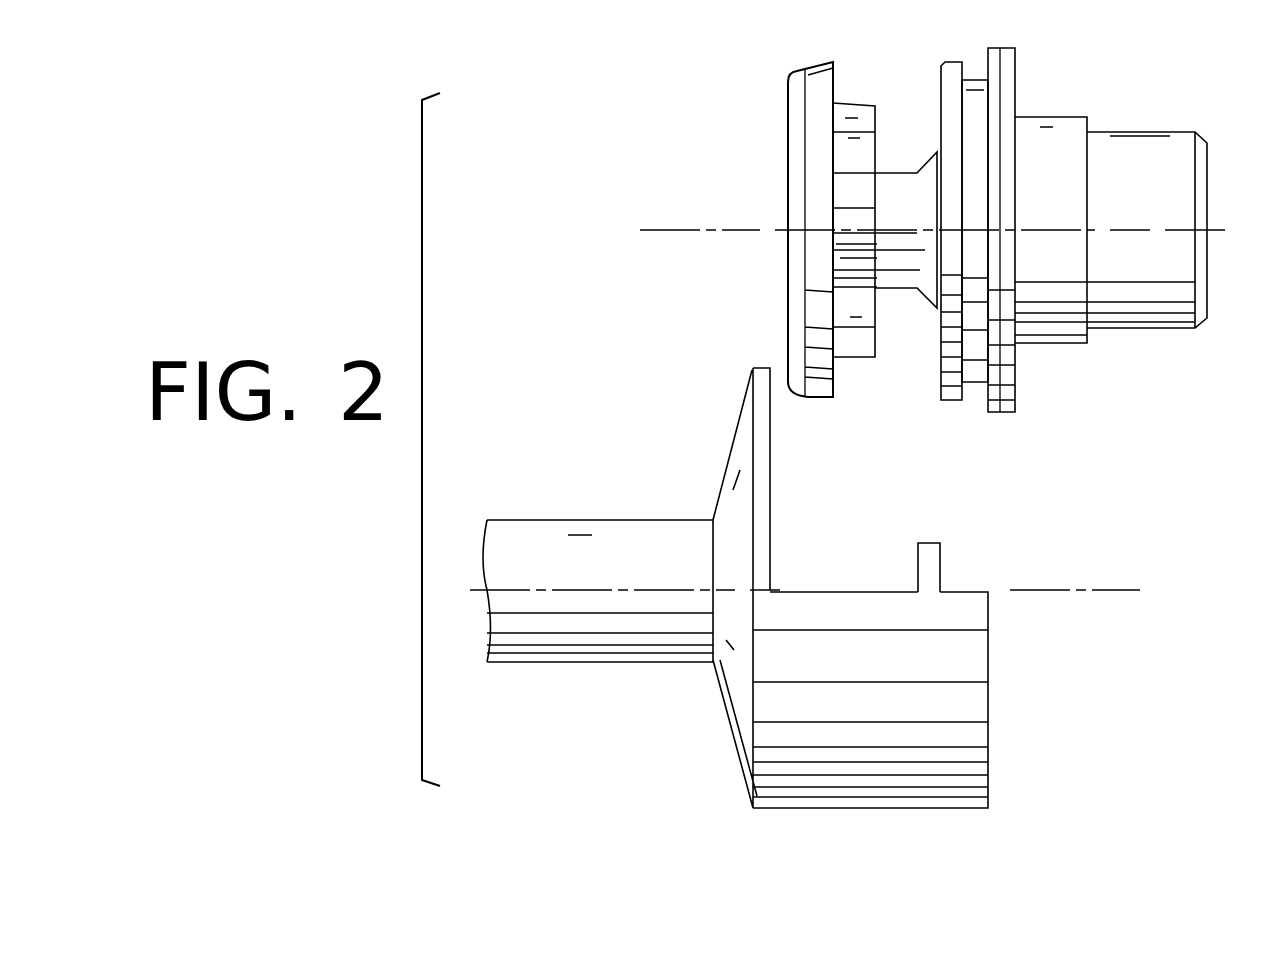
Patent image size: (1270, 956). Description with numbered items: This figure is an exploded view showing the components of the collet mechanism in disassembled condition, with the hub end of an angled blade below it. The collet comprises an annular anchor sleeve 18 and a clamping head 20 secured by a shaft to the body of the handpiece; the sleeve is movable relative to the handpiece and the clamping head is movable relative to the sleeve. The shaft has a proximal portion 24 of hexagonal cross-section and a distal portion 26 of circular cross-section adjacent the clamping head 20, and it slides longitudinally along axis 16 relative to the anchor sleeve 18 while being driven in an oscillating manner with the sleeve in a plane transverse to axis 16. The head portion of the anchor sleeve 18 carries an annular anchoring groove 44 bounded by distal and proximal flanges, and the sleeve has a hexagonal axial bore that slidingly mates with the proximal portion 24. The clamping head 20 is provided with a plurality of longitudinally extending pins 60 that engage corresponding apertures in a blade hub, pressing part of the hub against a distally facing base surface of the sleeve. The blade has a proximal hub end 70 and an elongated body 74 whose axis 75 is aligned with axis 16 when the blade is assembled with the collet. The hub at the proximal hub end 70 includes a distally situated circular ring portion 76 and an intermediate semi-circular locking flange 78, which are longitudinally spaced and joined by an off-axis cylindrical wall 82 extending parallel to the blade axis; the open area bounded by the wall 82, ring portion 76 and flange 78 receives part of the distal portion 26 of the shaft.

The axis 16 is at (670, 231).
The annular anchor sleeve 18 is at (1018, 395).
The clamping head 20 is at (790, 74).
The proximal portion 24 is at (940, 376).
The distal portion 26 is at (893, 192).
The annular anchoring groove 44 is at (973, 80).
The longitudinally extending pins 60 is at (865, 252).
The proximal hub end 70 is at (805, 620).
The elongated body 74 is at (575, 632).
The axis 75 is at (1106, 592).
The circular ring portion 76 is at (746, 722).
The semi-circular locking flange 78 is at (932, 578).
The off-axis cylindrical wall 82 is at (978, 730).